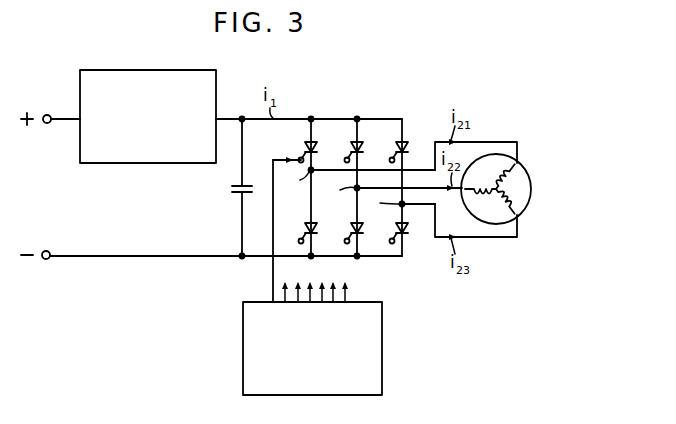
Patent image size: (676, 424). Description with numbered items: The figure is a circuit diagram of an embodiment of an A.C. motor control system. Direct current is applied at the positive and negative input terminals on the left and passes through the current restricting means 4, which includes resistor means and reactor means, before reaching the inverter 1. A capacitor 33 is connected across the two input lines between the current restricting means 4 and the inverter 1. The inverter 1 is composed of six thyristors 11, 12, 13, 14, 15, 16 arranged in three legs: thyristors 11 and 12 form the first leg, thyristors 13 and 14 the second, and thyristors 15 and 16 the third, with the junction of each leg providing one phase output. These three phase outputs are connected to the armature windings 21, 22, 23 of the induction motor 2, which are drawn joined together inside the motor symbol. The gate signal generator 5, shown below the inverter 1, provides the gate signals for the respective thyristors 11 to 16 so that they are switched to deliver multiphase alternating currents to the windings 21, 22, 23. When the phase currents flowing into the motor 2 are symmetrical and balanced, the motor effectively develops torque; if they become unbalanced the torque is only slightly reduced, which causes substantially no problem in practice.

The inverter 1 is at (340, 100).
The induction motor 2 is at (503, 189).
The current restricting means 4 is at (146, 70).
The gate signal generator 5 is at (382, 332).
The thyristor 11 is at (299, 150).
The thyristor 12 is at (304, 228).
The thyristor 13 is at (350, 151).
The thyristor 14 is at (350, 226).
The thyristor 15 is at (396, 147).
The thyristor 16 is at (404, 246).
The armature winding 21 is at (527, 176).
The armature winding 22 is at (475, 210).
The armature winding 23 is at (522, 210).
The capacitor 33 is at (231, 189).